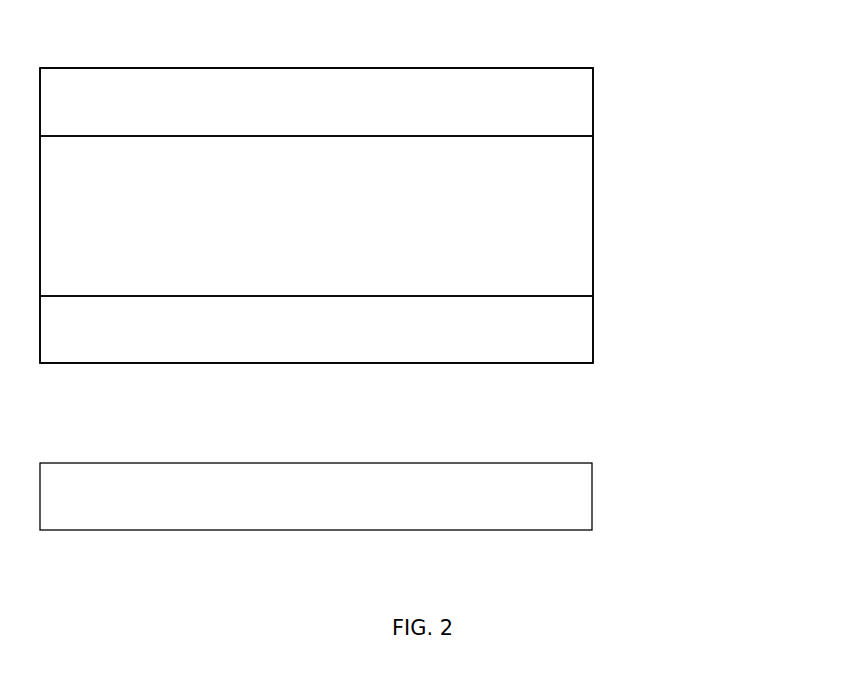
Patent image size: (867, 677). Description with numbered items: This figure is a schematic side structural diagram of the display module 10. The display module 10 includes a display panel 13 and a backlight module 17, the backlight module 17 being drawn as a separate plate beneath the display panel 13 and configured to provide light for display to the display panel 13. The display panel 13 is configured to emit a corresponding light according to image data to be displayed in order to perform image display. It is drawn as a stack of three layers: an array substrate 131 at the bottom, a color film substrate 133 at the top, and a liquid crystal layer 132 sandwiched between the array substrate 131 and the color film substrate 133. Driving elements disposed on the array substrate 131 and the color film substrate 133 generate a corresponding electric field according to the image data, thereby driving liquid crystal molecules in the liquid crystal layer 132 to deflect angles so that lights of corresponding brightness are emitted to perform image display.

The display module 10 is at (322, 32).
The display panel 13 is at (705, 14).
The array substrate 131 is at (593, 327).
The liquid crystal layer 132 is at (593, 217).
The color film substrate 133 is at (593, 97).
The backlight module 17 is at (592, 497).